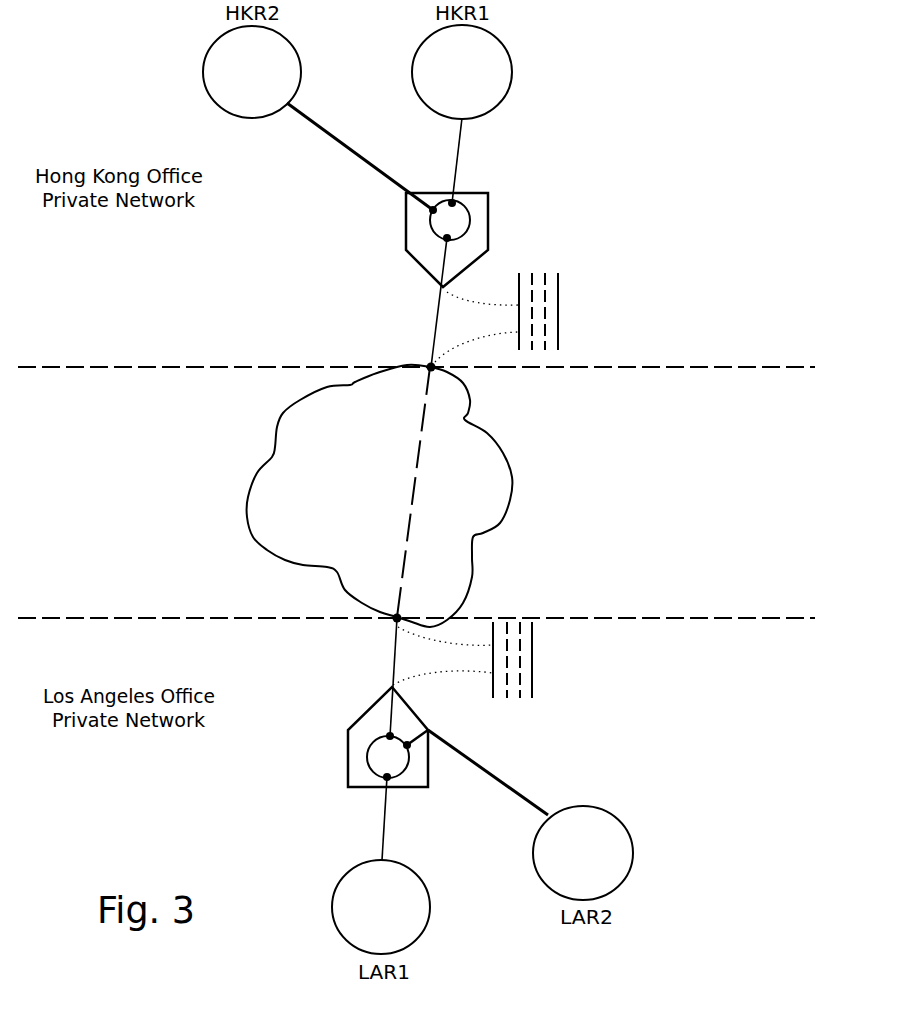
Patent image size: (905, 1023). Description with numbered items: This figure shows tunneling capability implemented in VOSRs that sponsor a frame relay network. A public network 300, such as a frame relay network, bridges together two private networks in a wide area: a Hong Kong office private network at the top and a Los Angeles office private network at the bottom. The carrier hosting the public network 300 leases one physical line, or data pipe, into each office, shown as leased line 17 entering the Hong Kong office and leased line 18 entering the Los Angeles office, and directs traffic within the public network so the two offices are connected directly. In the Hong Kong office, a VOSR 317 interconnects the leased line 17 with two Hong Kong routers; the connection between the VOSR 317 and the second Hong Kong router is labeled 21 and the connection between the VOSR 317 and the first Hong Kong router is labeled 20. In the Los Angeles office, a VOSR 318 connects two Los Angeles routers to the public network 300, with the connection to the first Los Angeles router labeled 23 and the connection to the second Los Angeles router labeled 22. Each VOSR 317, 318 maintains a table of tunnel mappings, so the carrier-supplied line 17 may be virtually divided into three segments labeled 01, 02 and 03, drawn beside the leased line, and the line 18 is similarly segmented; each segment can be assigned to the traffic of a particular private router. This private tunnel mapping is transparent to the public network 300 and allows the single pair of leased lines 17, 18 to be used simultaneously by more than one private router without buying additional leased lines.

The tunnel segment 01 is at (526, 282).
The tunnel segment 02 is at (539, 345).
The tunnel segment 03 is at (551, 290).
The leased line 17 is at (509, 305).
The leased line 18 is at (476, 675).
The connection 20 is at (465, 160).
The connection 21 is at (360, 156).
The connection 22 is at (477, 772).
The connection 23 is at (400, 818).
The public network 300 is at (380, 496).
The VOSR 317 is at (488, 193).
The VOSR 318 is at (347, 742).